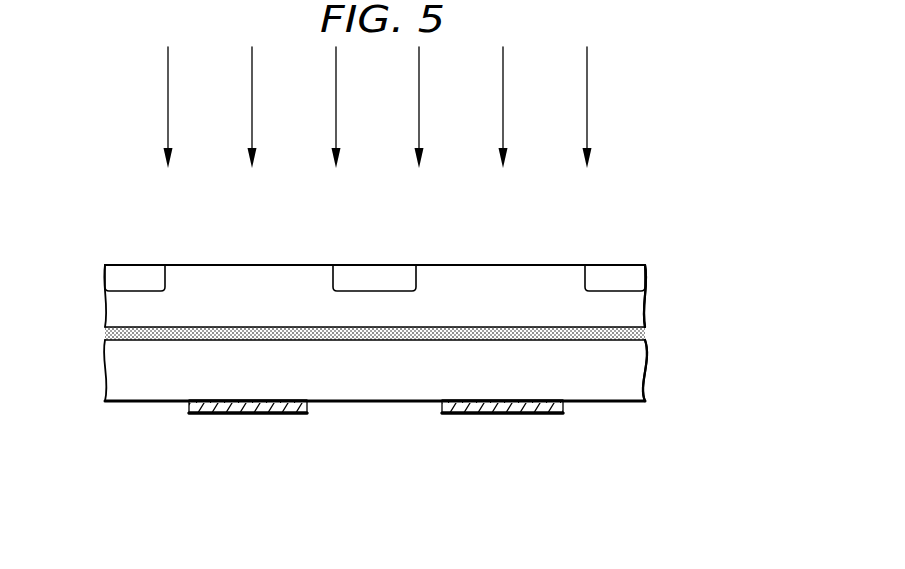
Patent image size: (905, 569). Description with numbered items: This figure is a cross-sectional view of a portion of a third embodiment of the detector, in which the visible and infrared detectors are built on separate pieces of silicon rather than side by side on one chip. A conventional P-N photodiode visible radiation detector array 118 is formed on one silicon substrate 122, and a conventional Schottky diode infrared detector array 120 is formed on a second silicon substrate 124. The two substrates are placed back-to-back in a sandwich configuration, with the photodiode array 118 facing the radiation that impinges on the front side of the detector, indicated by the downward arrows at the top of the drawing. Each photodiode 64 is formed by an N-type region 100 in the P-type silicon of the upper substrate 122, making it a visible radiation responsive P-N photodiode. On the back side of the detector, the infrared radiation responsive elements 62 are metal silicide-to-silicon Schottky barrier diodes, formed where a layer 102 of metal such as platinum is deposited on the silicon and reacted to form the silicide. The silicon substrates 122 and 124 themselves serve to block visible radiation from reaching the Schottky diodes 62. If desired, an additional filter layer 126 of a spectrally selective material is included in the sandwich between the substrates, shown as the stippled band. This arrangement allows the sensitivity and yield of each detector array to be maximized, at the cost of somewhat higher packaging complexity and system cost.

The infrared radiation responsive element 62 is at (214, 425).
The P-N photodiode 64 is at (367, 254).
The N-type region 100 is at (335, 282).
The layer of metal 102 is at (443, 414).
The P-N photodiode visible radiation detector array 118 is at (658, 296).
The Schottky diode infrared detector array 120 is at (661, 377).
The silicon substrate 122 is at (117, 307).
The silicon substrate 124 is at (120, 367).
The filter layer 126 is at (650, 337).